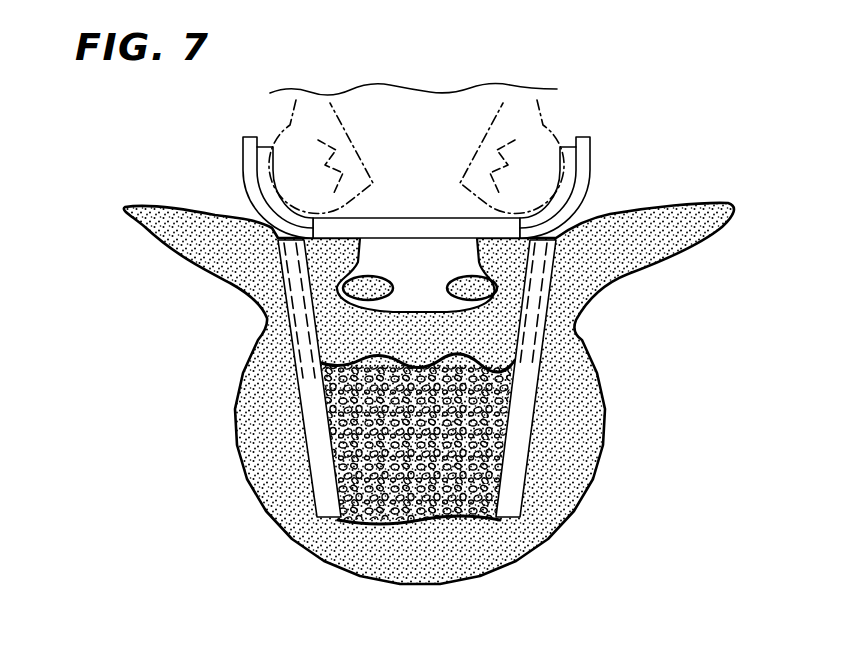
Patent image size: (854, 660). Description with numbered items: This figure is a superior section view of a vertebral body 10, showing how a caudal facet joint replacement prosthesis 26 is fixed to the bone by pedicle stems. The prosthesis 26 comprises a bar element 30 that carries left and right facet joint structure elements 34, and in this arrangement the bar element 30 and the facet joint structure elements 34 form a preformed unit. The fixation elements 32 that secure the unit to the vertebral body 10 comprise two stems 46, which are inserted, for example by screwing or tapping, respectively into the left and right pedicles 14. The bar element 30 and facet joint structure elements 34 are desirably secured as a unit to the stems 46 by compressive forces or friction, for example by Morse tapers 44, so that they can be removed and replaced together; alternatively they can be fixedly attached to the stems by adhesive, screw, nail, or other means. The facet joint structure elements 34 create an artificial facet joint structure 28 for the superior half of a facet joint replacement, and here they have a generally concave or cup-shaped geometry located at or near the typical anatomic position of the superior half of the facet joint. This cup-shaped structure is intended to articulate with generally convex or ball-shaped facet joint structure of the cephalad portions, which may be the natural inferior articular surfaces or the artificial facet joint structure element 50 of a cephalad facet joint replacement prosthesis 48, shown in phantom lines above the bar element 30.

The vertebral body 10 is at (577, 503).
The pedicles 14 is at (248, 200).
The caudal facet joint replacement prosthesis 26 is at (670, 170).
The artificial facet joint structure 28 is at (303, 150).
The bar element 30 is at (440, 230).
The fixation element 32 is at (258, 325).
The facet joint structure elements 34 is at (248, 163).
The Morse tapers 44 is at (608, 217).
The stems 46 is at (527, 400).
The cephalad facet joint replacement prosthesis 48 is at (392, 135).
The artificial facet joint structure element 50 is at (353, 85).